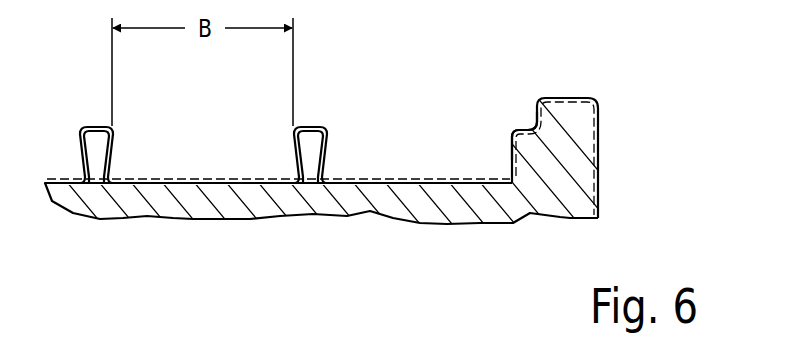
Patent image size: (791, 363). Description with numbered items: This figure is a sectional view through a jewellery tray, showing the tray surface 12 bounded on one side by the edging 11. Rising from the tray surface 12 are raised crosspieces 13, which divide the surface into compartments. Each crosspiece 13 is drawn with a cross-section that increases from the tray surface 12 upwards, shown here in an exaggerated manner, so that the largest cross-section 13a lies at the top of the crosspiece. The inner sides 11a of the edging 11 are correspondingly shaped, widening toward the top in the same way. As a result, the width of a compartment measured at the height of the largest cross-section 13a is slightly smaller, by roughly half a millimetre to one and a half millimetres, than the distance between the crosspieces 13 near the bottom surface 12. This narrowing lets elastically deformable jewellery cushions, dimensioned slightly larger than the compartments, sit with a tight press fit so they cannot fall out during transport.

The edging 11 is at (555, 97).
The inner sides of the edging 11a is at (511, 152).
The tray surface 12 is at (203, 178).
The crosspieces 13 is at (94, 127).
The largest cross-section of the crosspieces 13a is at (328, 127).